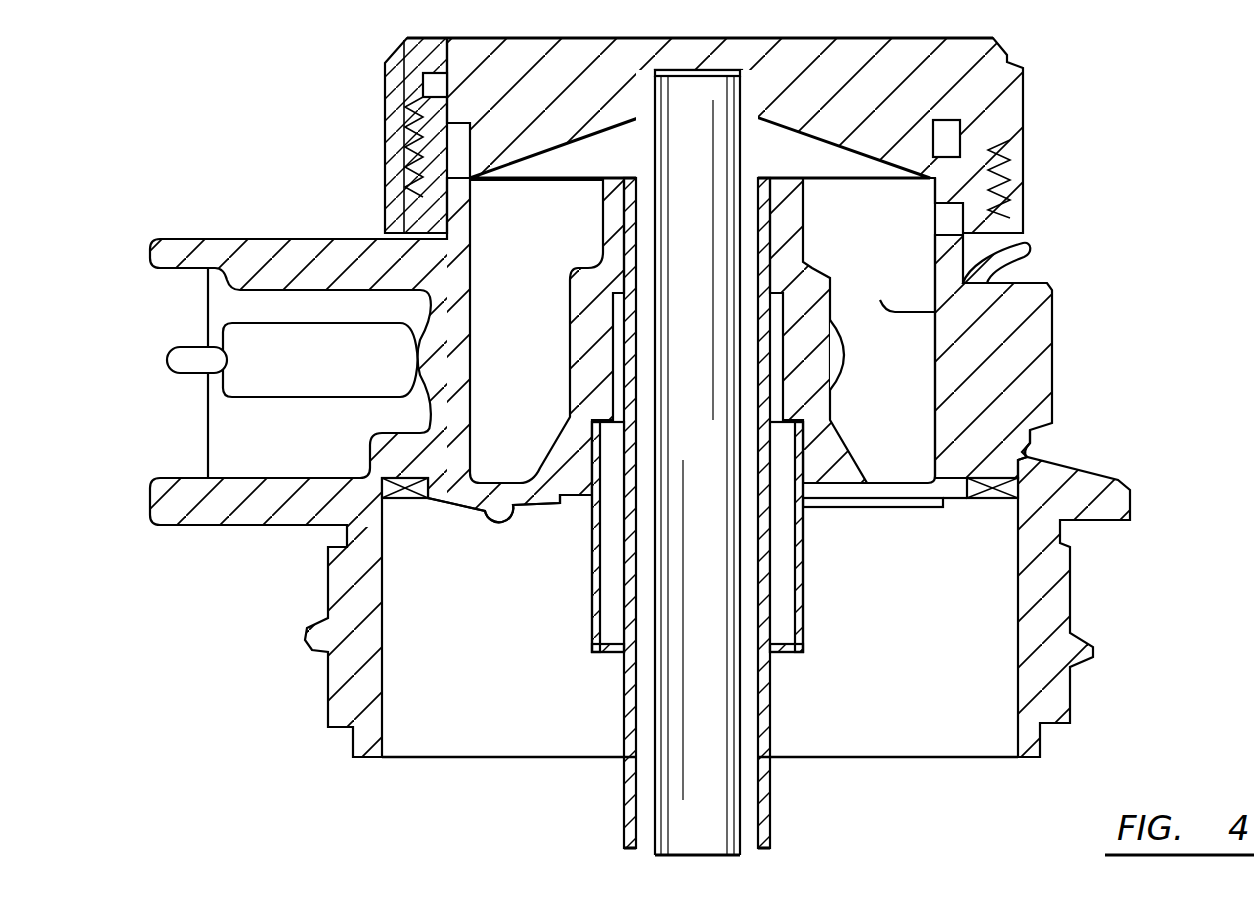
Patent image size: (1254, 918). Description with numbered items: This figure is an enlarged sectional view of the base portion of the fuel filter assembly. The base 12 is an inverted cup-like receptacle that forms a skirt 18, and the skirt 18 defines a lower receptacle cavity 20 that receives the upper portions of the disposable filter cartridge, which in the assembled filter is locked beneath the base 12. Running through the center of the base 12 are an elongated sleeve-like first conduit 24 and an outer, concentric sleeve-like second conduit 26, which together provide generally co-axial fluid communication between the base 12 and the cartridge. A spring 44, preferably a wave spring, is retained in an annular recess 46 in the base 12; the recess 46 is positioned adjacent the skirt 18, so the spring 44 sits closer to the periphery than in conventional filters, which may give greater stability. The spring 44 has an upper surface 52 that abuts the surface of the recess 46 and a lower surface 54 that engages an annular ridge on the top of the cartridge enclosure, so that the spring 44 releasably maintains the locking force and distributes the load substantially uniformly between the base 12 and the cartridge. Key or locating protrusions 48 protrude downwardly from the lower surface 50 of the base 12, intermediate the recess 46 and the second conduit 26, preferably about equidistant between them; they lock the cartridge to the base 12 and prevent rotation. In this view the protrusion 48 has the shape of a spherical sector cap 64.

The base 12 is at (283, 138).
The skirt 18 is at (1043, 409).
The lower receptacle cavity 20 is at (1018, 681).
The first conduit 24 is at (770, 792).
The second conduit 26 is at (828, 427).
The spring 44 is at (1000, 503).
The annular recess 46 is at (1033, 450).
The key protrusions 48 is at (507, 516).
The lower surface 50 is at (874, 508).
The upper surface 52 is at (400, 475).
The lower surface 54 is at (397, 505).
The spherical sector cap 64 is at (497, 522).